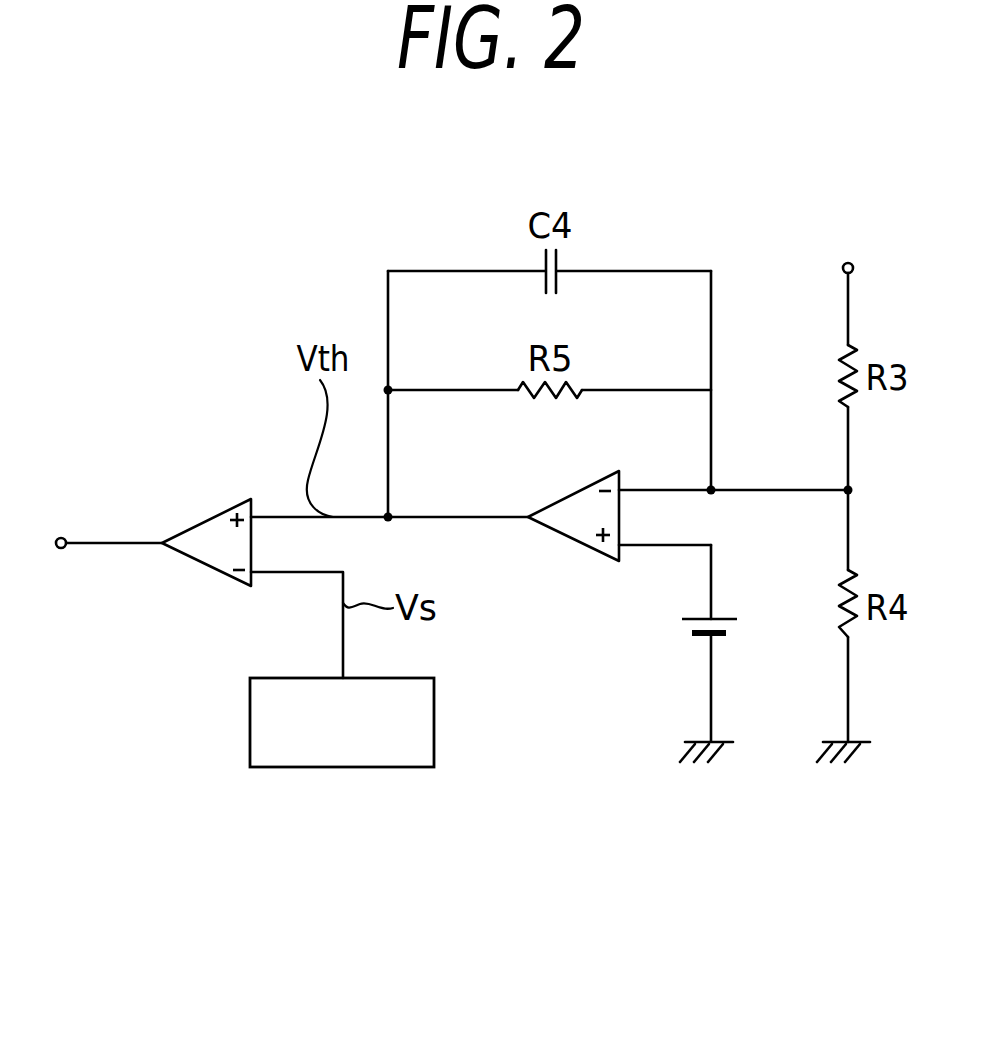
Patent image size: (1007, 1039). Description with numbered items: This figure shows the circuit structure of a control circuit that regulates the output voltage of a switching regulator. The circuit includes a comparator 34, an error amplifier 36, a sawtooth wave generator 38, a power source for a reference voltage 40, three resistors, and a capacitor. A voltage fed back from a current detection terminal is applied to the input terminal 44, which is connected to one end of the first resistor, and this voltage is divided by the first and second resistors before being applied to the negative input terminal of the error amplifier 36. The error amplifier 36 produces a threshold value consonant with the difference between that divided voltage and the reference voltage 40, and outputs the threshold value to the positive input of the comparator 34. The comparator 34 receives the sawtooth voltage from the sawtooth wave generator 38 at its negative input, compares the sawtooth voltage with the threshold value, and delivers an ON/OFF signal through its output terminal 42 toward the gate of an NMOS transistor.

The comparator 34 is at (221, 512).
The error amplifier 36 is at (562, 537).
The sawtooth wave generator 38 is at (323, 768).
The power source for a reference voltage 40 is at (687, 622).
The output terminal 42 is at (62, 538).
The input terminal 44 is at (850, 262).